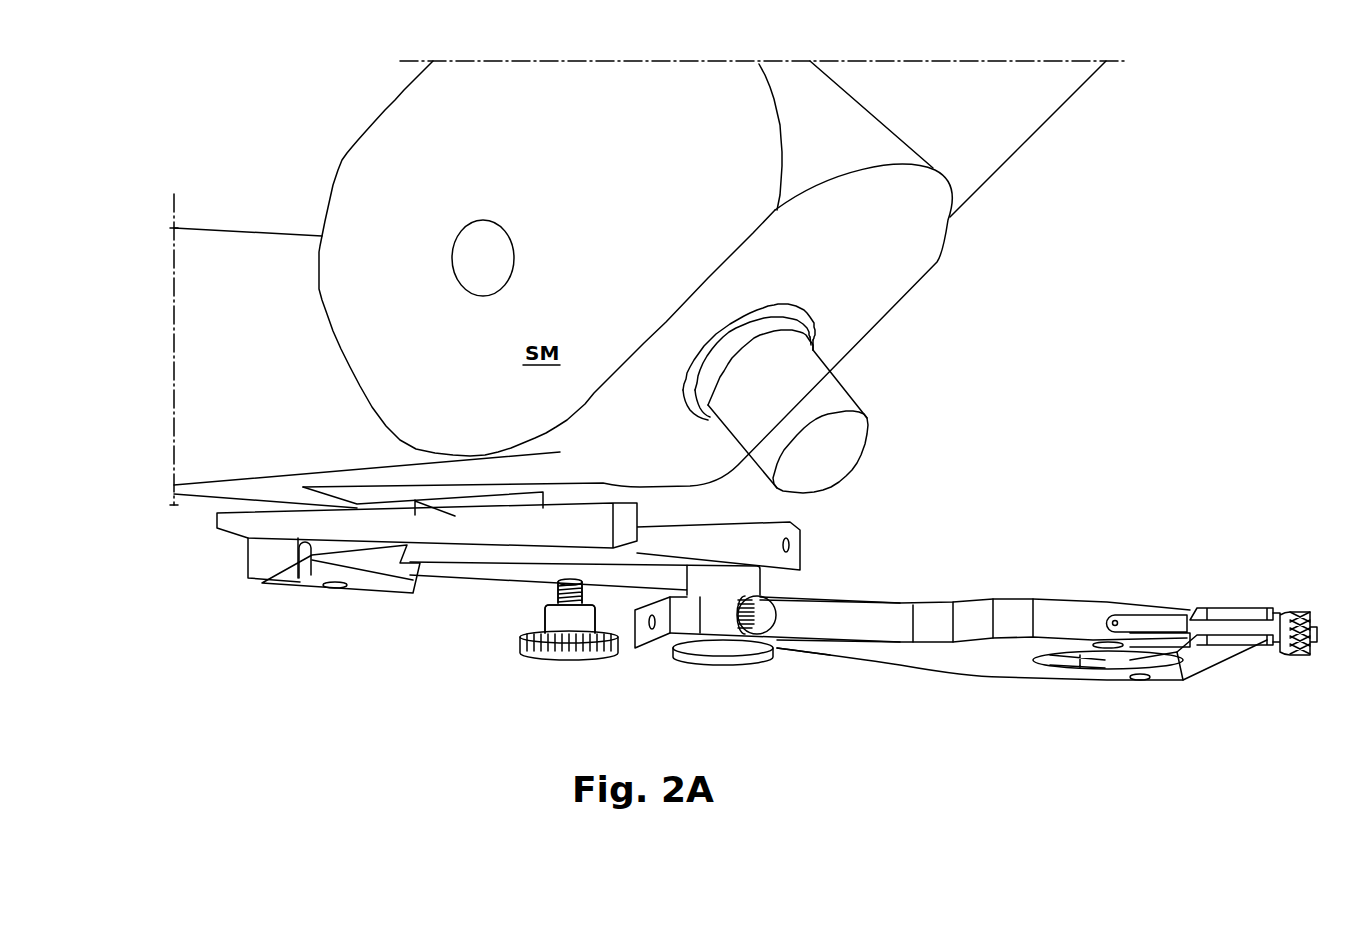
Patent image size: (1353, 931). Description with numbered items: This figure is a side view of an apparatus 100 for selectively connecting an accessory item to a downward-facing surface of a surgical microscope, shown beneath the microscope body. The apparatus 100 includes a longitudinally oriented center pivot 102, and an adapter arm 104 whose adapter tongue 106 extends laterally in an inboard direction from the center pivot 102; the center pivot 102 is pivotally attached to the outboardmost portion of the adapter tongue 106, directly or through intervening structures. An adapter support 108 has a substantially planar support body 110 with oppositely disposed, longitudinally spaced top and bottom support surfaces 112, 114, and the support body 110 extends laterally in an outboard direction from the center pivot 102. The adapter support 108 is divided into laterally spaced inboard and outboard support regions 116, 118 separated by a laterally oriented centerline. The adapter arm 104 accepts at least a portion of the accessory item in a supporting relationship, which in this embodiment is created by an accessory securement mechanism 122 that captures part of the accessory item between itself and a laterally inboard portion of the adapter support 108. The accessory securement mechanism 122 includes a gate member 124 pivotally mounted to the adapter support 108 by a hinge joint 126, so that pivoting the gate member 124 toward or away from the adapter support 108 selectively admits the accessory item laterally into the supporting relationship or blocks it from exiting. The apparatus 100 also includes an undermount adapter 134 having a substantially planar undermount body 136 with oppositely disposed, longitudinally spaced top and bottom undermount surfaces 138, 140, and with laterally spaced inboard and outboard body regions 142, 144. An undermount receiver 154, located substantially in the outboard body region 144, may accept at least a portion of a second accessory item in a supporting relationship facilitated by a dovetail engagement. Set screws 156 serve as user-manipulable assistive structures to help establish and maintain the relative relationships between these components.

The apparatus 100 is at (974, 640).
The center pivot 102 is at (707, 645).
The adapter arm 104 is at (893, 580).
The adapter tongue 106 is at (542, 562).
The adapter support 108 is at (1055, 640).
The support body 110 is at (972, 625).
The top support surface 112 is at (1060, 600).
The bottom support surface 114 is at (1145, 665).
The inboard support region 116 is at (804, 712).
The outboard support region 118 is at (1190, 583).
The accessory securement mechanism 122 is at (1200, 662).
The gate member 124 is at (1240, 652).
The hinge joint 126 is at (1170, 628).
The undermount adapter 134 is at (302, 635).
The undermount body 136 is at (250, 568).
The top undermount surface 138 is at (330, 530).
The bottom undermount surface 140 is at (470, 572).
The inboard body region 142 is at (510, 638).
The outboard body region 144 is at (296, 616).
The undermount receiver 154 is at (385, 560).
The set screw 156 is at (563, 642).